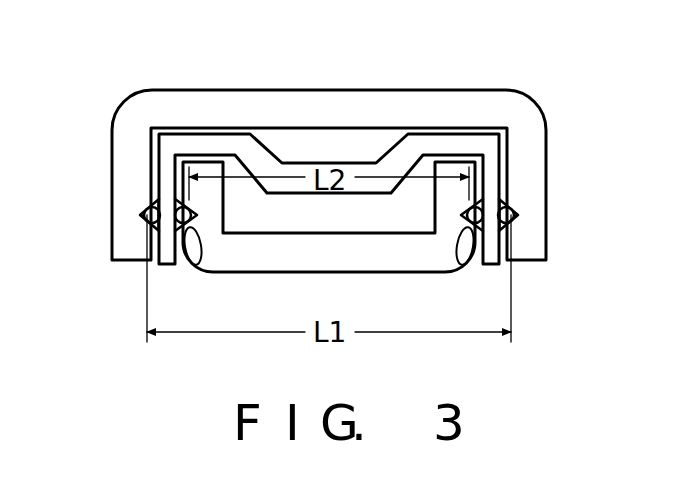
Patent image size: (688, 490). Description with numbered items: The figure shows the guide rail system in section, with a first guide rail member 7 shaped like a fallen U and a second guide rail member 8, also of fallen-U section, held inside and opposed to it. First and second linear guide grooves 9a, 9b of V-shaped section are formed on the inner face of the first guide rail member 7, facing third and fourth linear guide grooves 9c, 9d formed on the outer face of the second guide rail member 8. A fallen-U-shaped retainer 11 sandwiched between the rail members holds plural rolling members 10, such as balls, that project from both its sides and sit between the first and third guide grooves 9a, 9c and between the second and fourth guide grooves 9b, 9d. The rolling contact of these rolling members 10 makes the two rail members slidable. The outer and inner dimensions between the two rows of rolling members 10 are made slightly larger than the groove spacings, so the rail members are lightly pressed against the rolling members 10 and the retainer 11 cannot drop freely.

The first guide rail member 7 is at (497, 90).
The second guide rail member 8 is at (393, 273).
The first linear guide groove 9a is at (507, 225).
The second linear guide groove 9b is at (147, 228).
The third linear guide groove 9c is at (458, 267).
The fourth linear guide groove 9d is at (197, 266).
The rolling members 10 is at (140, 213).
The retainer 11 is at (320, 163).